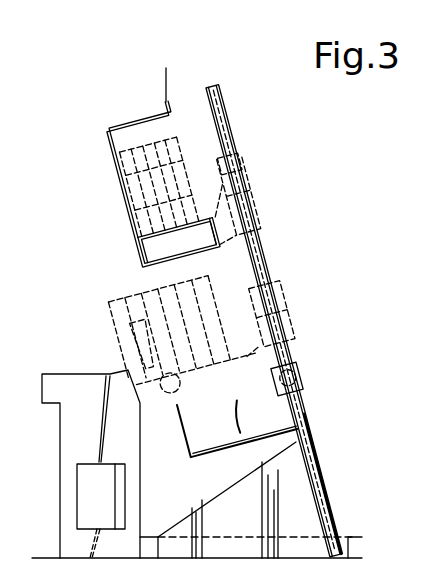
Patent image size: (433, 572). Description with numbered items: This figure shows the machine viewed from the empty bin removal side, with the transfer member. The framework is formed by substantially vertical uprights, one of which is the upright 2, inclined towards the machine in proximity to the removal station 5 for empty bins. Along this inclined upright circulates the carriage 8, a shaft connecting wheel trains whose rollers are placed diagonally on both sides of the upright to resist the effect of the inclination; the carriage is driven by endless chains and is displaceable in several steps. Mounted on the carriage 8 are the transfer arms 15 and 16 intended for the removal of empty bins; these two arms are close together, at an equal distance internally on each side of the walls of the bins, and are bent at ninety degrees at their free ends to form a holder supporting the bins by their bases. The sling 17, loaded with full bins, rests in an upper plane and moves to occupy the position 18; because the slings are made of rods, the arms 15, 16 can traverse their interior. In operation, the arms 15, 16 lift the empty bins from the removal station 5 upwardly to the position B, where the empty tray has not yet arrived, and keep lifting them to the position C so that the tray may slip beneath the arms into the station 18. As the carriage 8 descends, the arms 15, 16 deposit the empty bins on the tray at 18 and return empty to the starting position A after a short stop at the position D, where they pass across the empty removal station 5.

The upright 2 is at (282, 318).
The removal station for empty bins 5 is at (186, 342).
The carriage 8 is at (303, 375).
The transfer arm 15 is at (236, 413).
The transfer arm 16 is at (236, 413).
The sling 17 is at (138, 175).
The position of the sling 18 is at (138, 175).
The starting position A is at (304, 382).
The position B is at (247, 194).
The position C is at (246, 161).
The position D is at (277, 314).